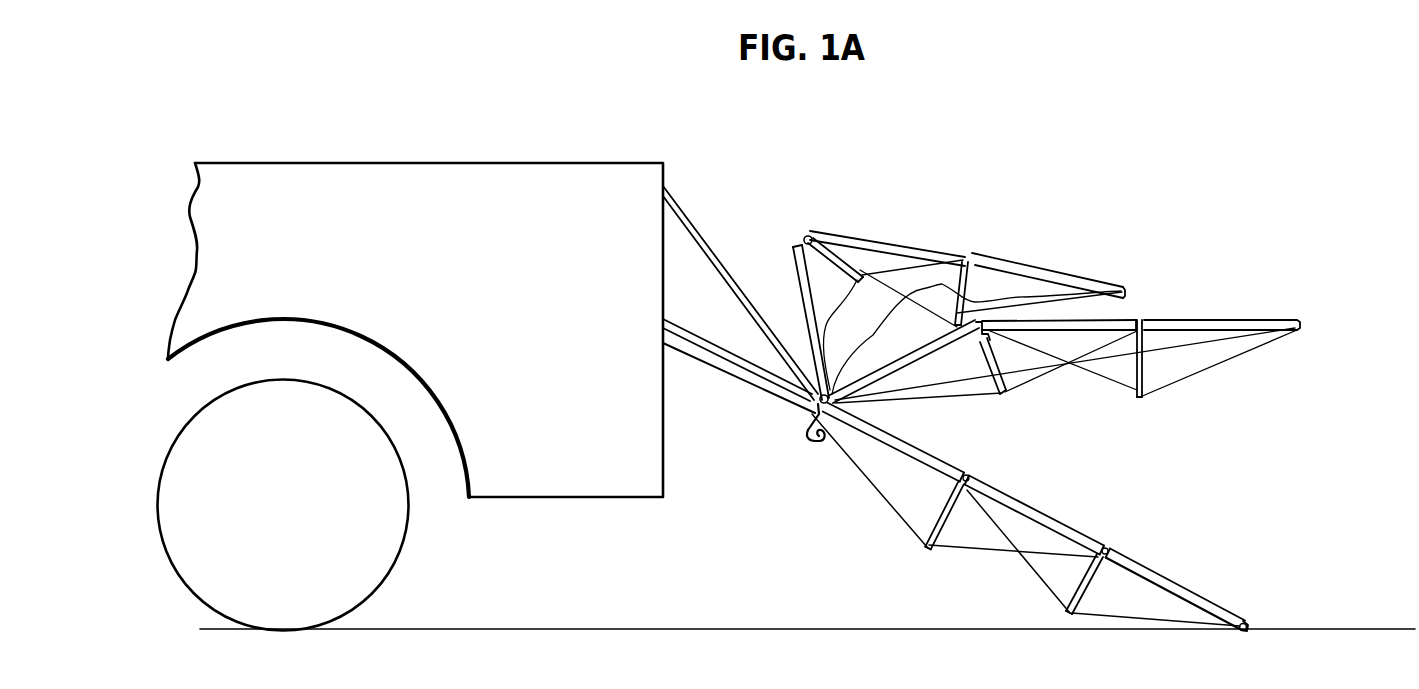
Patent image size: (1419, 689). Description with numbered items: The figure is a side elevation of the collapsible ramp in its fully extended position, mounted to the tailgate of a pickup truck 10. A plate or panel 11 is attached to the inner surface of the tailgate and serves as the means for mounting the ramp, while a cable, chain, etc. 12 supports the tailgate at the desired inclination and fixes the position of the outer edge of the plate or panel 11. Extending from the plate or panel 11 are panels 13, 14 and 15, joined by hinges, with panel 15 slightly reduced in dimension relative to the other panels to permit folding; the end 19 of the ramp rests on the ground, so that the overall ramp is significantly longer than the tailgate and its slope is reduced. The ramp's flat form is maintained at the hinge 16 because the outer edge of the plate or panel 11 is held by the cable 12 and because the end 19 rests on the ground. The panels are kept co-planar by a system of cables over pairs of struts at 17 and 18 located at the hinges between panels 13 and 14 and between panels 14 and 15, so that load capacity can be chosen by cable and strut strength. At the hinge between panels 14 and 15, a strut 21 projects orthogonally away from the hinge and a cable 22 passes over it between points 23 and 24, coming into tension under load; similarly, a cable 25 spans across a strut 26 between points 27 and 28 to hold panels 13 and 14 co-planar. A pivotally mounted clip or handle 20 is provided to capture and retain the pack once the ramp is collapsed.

The pickup truck 10 is at (575, 175).
The plate or panel 11 is at (730, 357).
The cable, chain, etc. 12 is at (699, 237).
The panel 13 is at (817, 342).
The panel 14 is at (873, 232).
The panel 15 is at (1090, 286).
The hinge 16 is at (798, 422).
The pair of struts 17 is at (898, 530).
The pair of struts 18 is at (1050, 610).
The end 19 is at (1262, 613).
The clip or handle 20 is at (811, 444).
The strut 21 is at (1100, 578).
The cable 22 is at (1125, 613).
The point 23 is at (978, 466).
The point 24 is at (1224, 596).
The cable 25 is at (976, 547).
The strut 26 is at (948, 508).
The point 27 is at (852, 404).
The point 28 is at (1112, 530).